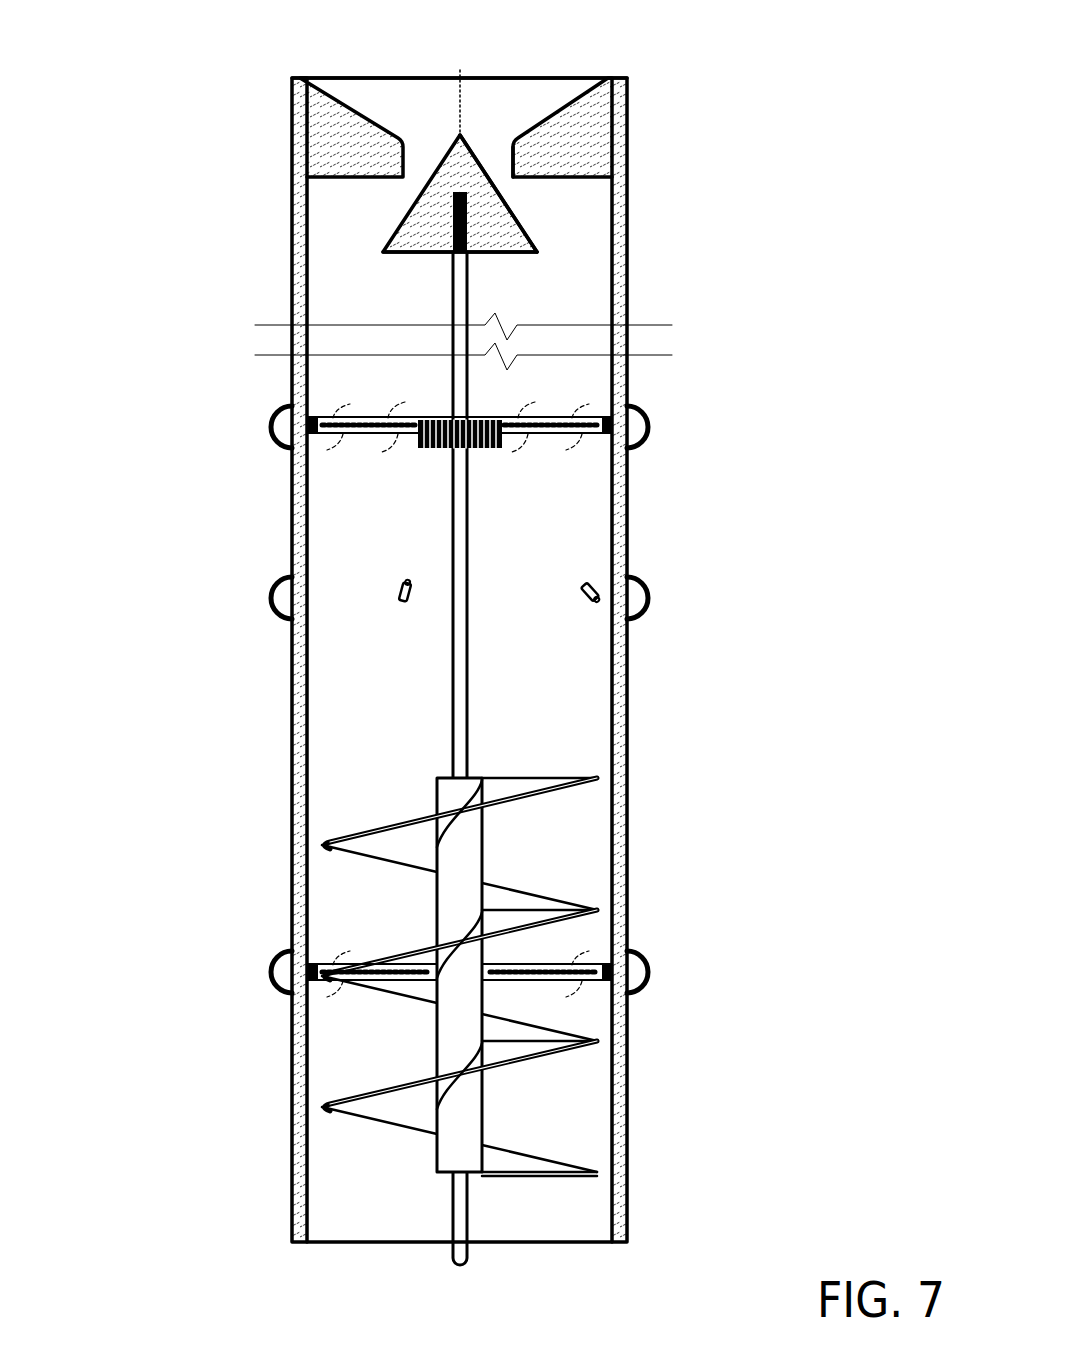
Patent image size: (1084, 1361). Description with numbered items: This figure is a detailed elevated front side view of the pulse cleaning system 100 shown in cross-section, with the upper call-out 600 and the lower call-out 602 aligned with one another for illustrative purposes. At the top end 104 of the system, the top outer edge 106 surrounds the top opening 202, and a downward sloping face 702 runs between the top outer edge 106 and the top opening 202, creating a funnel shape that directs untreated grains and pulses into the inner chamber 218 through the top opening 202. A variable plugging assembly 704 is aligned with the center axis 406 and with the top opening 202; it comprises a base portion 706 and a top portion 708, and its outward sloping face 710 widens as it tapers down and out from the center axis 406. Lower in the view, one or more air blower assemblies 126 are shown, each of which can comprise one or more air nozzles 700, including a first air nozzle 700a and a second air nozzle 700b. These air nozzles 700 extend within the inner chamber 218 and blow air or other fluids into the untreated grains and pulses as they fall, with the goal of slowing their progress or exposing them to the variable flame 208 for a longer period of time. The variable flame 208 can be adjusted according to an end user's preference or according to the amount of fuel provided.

The pulse cleaning system 100 is at (772, 68).
The top end 104 is at (628, 153).
The top outer edge 106 is at (292, 80).
The air blower assemblies 126 is at (642, 607).
The top opening 202 is at (425, 162).
The variable flame 208 is at (578, 443).
The inner chamber 218 is at (570, 850).
The center axis 406 is at (463, 95).
The upper call-out 600 is at (205, 232).
The lower call-out 602 is at (205, 488).
The air nozzles 700 is at (466, 664).
The first air nozzle 700a is at (598, 605).
The second air nozzle 700b is at (398, 600).
The downward sloping face 702 is at (560, 112).
The variable plugging assembly 704 is at (372, 200).
The base portion 706 is at (418, 255).
The top portion 708 is at (519, 140).
The outward sloping face 710 is at (523, 222).